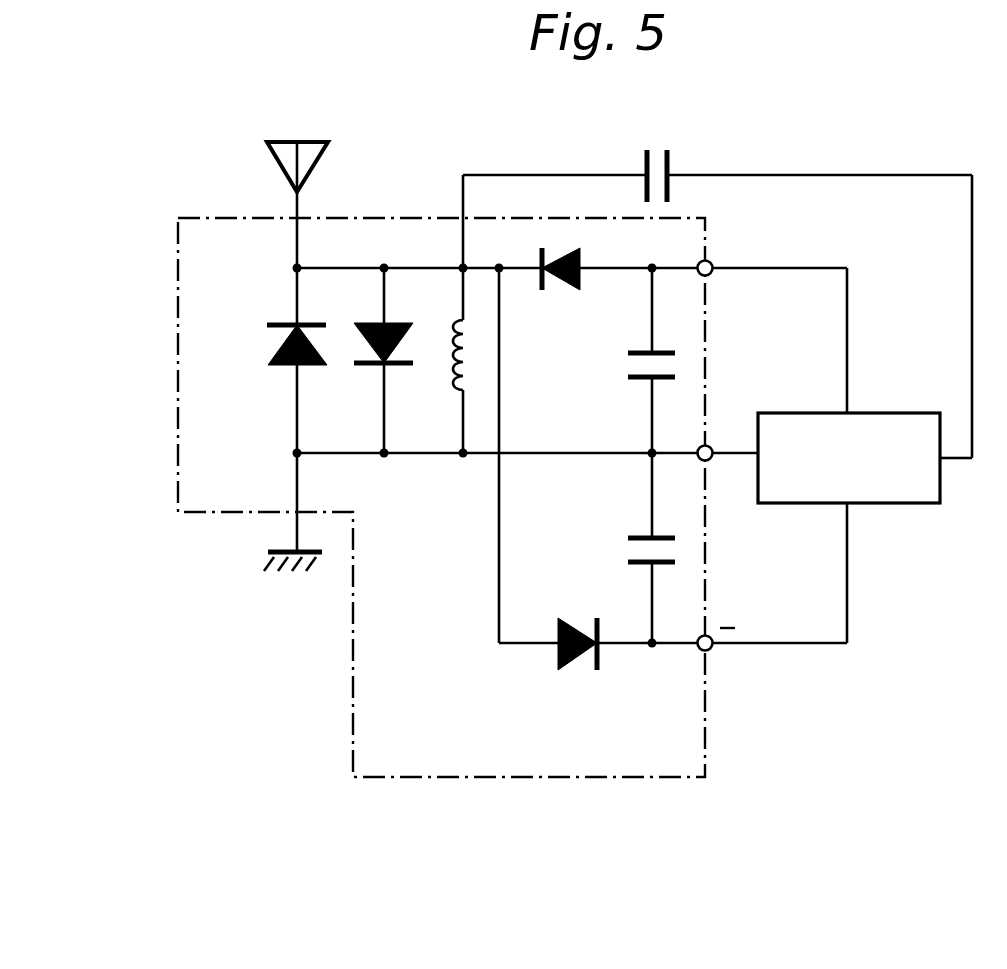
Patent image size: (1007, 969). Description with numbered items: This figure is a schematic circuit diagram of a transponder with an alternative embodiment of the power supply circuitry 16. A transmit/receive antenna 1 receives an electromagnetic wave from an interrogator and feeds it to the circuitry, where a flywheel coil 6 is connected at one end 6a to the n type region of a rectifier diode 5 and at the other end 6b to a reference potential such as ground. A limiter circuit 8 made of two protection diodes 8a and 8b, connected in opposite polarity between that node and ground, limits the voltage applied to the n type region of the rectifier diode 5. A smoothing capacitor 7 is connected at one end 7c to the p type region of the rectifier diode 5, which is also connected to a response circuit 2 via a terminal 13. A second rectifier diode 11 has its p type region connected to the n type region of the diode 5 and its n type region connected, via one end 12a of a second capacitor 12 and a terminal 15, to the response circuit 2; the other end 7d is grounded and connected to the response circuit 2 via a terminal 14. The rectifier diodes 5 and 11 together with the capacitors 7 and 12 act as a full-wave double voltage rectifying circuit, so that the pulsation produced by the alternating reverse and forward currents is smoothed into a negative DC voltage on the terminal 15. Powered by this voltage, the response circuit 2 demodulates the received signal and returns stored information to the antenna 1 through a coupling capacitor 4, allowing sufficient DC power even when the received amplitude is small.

The transmit/receive antenna 1 is at (313, 142).
The response circuit 2 is at (905, 504).
The coupling capacitor 4 is at (663, 148).
The rectifier diode 5 is at (565, 292).
The flywheel coil 6 is at (447, 388).
The one end of flywheel coil 6a is at (460, 265).
The other end of flywheel coil 6b is at (461, 458).
The smoothing capacitor 7 is at (632, 378).
The one end of smoothing capacitor 7c is at (632, 246).
The other end of capacitor 7d is at (654, 451).
The limiter circuit 8 is at (320, 349).
The protection diode 8a is at (360, 365).
The protection diode 8b is at (270, 365).
The rectifier diode 11 is at (570, 616).
The capacitor 12 is at (631, 536).
The one end of capacitor 12a is at (654, 646).
The terminal 13 is at (712, 273).
The terminal 14 is at (712, 460).
The terminal 15 is at (712, 650).
The power supply circuitry 16 is at (353, 735).